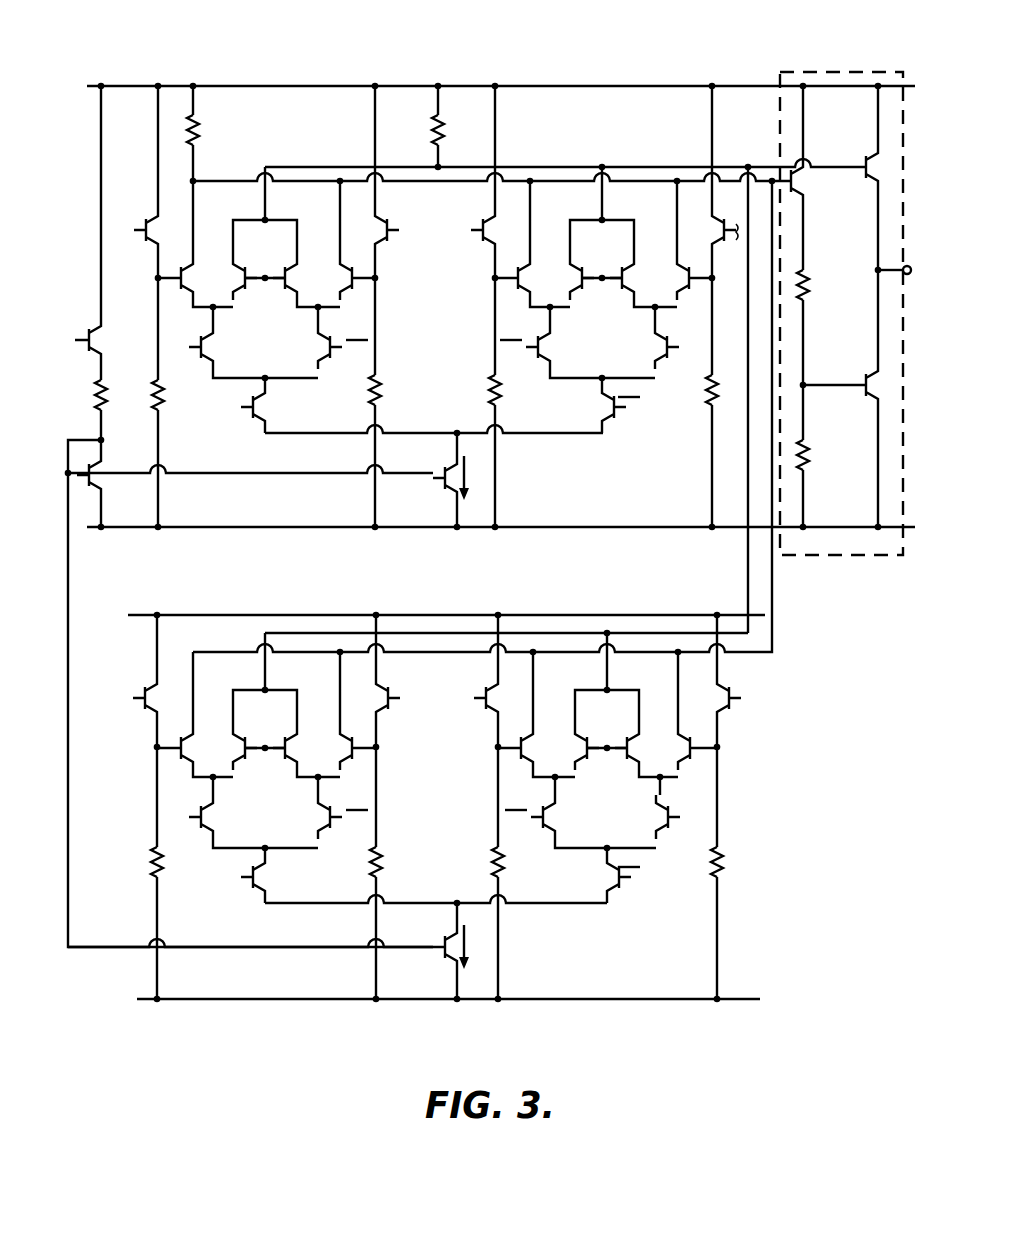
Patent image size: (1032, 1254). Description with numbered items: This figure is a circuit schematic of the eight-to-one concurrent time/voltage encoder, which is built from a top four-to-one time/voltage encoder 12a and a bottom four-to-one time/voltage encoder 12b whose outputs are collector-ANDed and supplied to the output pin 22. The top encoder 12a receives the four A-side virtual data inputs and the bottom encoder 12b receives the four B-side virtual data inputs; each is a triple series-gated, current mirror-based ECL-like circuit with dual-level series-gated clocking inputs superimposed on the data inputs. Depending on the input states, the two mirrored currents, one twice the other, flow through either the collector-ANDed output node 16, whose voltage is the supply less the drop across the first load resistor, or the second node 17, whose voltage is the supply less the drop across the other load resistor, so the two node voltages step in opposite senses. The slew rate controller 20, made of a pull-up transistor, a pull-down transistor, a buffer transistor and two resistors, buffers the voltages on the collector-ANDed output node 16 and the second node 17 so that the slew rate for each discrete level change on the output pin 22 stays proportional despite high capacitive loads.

The first 4:1 time/voltage encoder 12a is at (87, 134).
The second 4:1 time/voltage encoder 12b is at (124, 631).
The collector-ANDed output node 16 is at (410, 141).
The second node 17 is at (771, 170).
The slew rate controller 20 is at (842, 66).
The VOUT pin 22 is at (907, 345).